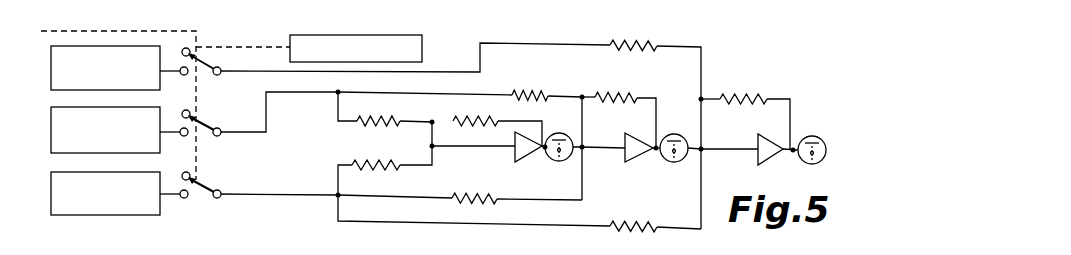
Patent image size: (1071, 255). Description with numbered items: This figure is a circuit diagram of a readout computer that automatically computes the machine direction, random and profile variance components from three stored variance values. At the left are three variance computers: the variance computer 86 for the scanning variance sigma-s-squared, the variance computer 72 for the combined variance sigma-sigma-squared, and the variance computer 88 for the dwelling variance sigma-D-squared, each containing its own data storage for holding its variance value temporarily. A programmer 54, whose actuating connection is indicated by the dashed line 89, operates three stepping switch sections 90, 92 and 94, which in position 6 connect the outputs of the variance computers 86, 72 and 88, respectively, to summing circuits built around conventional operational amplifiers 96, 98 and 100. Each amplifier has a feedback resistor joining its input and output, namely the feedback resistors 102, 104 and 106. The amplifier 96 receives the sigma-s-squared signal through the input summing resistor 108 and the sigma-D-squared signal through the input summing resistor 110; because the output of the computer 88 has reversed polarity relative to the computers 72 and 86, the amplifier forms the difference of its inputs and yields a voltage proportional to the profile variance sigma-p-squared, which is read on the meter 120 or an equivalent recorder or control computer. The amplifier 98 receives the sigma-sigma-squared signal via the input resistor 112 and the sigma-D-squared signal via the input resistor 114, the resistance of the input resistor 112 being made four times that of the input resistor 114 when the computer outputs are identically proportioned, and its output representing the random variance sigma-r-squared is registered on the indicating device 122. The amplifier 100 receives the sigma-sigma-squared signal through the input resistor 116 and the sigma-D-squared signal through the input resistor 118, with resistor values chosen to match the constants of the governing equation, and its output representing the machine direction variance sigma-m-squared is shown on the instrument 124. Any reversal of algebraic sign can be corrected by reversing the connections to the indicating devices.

The switch position 6 is at (179, 141).
The programmer 54 is at (422, 50).
The variance computer 72 is at (54, 115).
The variance computer 86 is at (54, 51).
The variance computer 88 is at (54, 176).
The dashed line 89 is at (197, 33).
The stepping switch section 90 is at (222, 95).
The stepping switch section 92 is at (222, 156).
The stepping switch section 94 is at (222, 217).
The operational amplifier 96 is at (758, 140).
The operational amplifier 98 is at (628, 155).
The operational amplifier 100 is at (512, 155).
The feedback resistor 102 is at (745, 91).
The feedback resistor 104 is at (622, 92).
The feedback resistor 106 is at (476, 118).
The input summing resistor 108 is at (643, 51).
The input summing resistor 110 is at (637, 222).
The input resistor 112 is at (530, 90).
The input resistor 114 is at (452, 203).
The input resistor 116 is at (378, 117).
The input resistor 118 is at (370, 172).
The meter 120 is at (828, 118).
The indicating device 122 is at (689, 115).
The instrument 124 is at (573, 117).